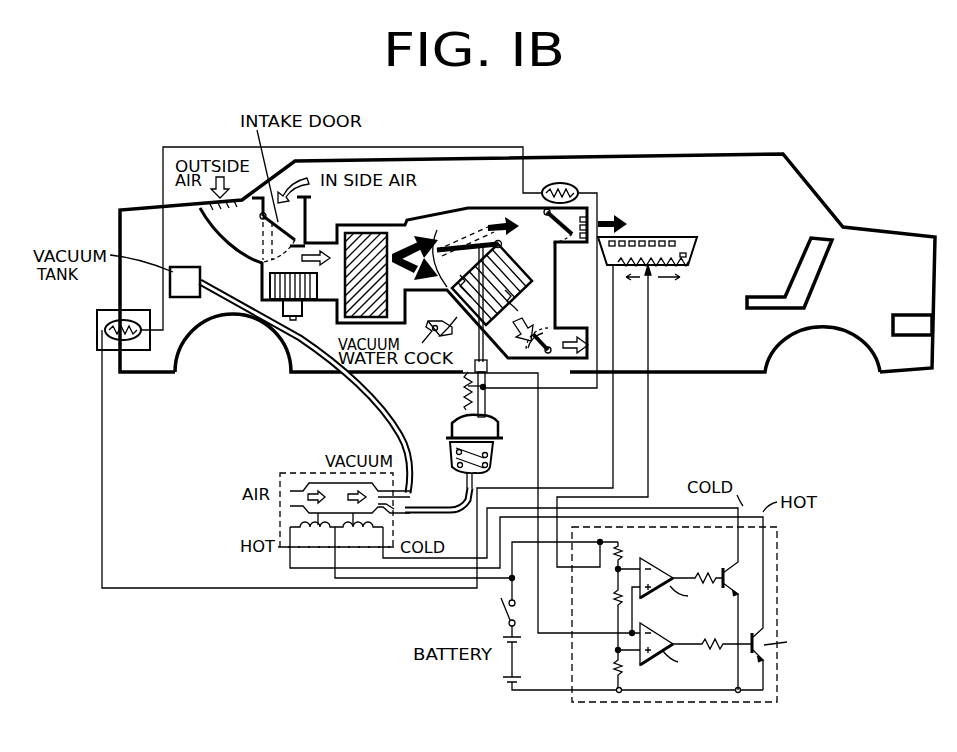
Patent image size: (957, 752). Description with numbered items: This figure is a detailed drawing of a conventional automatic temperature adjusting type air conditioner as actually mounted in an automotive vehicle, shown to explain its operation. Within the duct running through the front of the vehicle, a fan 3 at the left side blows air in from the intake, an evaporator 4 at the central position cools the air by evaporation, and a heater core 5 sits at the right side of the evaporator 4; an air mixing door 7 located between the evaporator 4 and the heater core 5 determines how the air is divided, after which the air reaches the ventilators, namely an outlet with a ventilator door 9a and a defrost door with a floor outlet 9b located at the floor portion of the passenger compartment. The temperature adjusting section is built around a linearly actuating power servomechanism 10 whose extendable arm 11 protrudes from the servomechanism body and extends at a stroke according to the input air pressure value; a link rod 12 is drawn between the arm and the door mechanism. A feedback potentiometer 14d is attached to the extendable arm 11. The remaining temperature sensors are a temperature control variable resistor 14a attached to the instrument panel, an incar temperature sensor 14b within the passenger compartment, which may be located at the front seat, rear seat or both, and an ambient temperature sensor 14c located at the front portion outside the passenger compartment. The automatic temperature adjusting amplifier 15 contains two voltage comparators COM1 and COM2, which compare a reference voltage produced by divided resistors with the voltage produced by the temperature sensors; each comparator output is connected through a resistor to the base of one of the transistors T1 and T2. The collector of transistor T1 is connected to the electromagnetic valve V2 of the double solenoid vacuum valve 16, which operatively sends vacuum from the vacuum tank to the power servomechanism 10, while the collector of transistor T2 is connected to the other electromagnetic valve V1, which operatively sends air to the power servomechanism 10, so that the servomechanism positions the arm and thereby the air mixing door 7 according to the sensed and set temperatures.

The fan 3 is at (262, 282).
The evaporator 4 is at (347, 306).
The heater core 5 is at (515, 283).
The air mixing door 7 is at (452, 243).
The ventilator door 9a is at (575, 235).
The floor outlet 9b is at (550, 352).
The power servomechanism 10 is at (500, 452).
The extendable arm 11 is at (486, 400).
The link rod 12 is at (481, 322).
The temperature control variable resistor 14a is at (657, 235).
The incar temperature sensor 14b is at (573, 185).
The ambient temperature sensor 14c is at (103, 317).
The feedback potentiometer 14d is at (462, 392).
The automatic temperature adjusting amplifier 15 is at (709, 614).
The double solenoid vacuum valve 16 is at (345, 486).
The electromagnetic valve V1 is at (310, 542).
The electromagnetic valve V2 is at (351, 542).
The voltage comparator COM1 is at (686, 583).
The voltage comparator COM2 is at (681, 649).
The transistor T1 is at (713, 625).
The transistor T2 is at (740, 657).